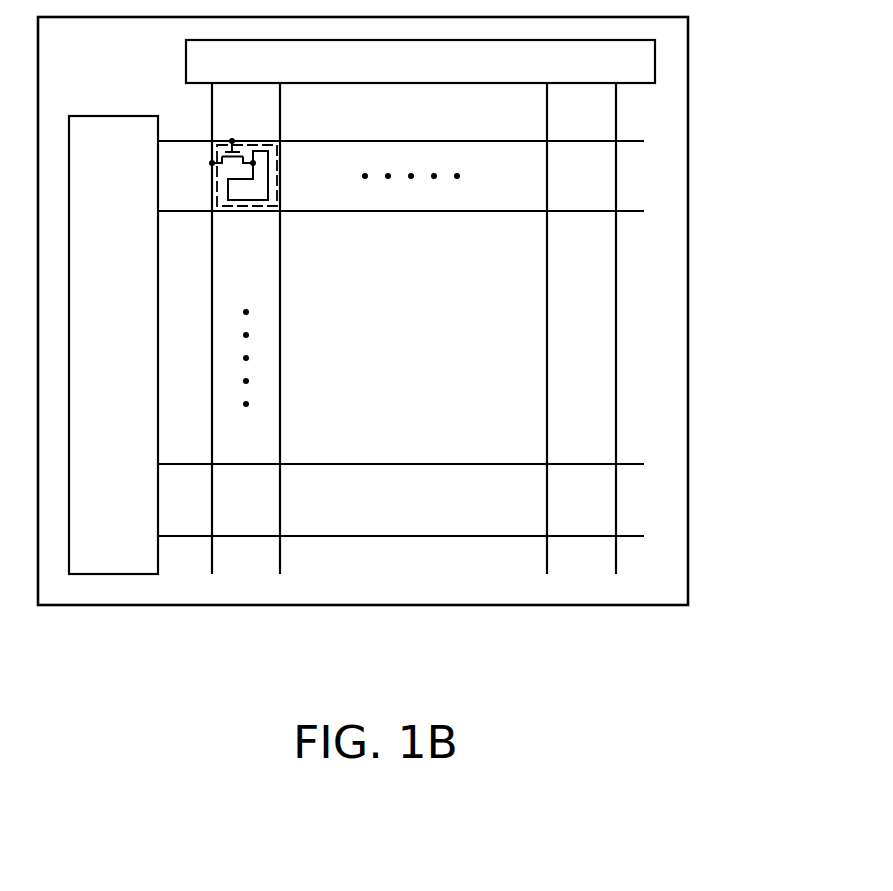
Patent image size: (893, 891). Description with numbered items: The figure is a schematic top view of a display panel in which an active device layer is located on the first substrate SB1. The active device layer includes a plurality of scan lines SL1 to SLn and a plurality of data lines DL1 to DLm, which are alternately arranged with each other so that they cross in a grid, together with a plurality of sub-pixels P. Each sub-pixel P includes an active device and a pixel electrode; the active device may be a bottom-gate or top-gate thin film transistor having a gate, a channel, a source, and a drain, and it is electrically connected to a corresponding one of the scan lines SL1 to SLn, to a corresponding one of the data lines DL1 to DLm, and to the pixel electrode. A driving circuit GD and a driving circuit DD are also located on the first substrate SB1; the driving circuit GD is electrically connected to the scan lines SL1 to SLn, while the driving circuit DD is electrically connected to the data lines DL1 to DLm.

The first substrate SB1 is at (687, 112).
The driving circuit DD is at (410, 74).
The driving circuit GD is at (133, 378).
The data line DL1 is at (212, 341).
The data line DLm is at (615, 302).
The scan line SL1 is at (232, 140).
The scan line SLn is at (241, 535).
The sub-pixel P is at (250, 207).